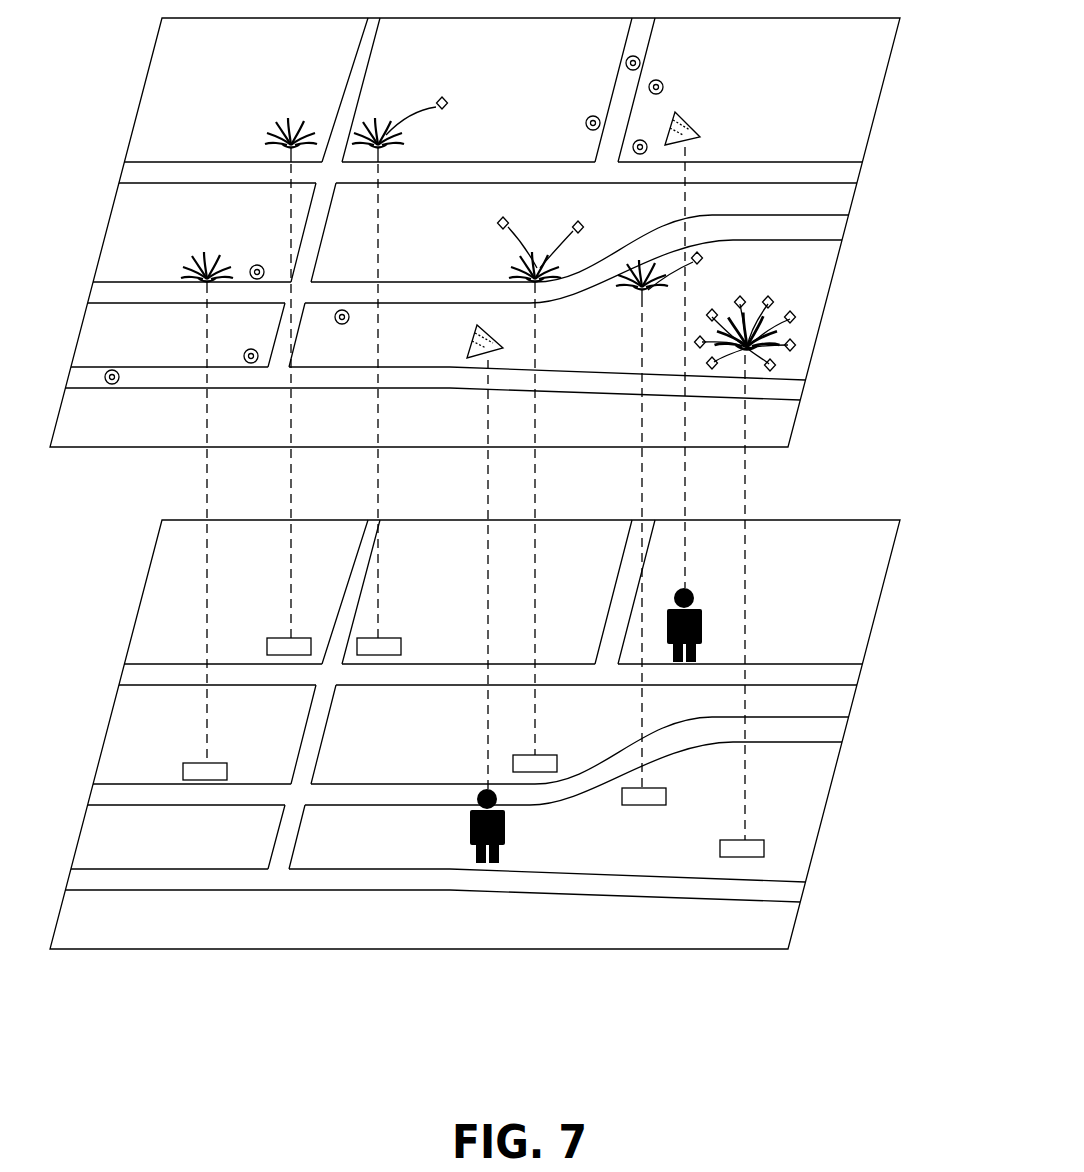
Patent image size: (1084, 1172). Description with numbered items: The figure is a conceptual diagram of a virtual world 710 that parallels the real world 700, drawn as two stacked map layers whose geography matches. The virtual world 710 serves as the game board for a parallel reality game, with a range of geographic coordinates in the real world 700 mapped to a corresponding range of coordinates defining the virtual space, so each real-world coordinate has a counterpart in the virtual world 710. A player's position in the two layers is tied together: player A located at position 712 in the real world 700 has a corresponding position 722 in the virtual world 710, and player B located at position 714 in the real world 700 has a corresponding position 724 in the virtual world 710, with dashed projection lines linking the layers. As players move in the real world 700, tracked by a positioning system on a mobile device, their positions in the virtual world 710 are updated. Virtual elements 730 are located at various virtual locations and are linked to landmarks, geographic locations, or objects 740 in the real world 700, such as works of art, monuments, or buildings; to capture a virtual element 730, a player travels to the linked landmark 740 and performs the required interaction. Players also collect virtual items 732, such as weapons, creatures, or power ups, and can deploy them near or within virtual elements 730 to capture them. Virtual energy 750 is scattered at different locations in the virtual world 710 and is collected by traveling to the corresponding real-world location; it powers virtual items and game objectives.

The real world 700 is at (878, 607).
The virtual world 710 is at (870, 140).
The position of player A in the real world 712 is at (470, 833).
The position of player B in the real world 714 is at (706, 616).
The corresponding position of player A in the virtual world 722 is at (497, 350).
The corresponding position of player B in the virtual world 724 is at (703, 134).
The virtual element 730 is at (293, 125).
The virtual item 732 is at (447, 103).
The real-world landmark or object 740 is at (283, 637).
The virtual energy 750 is at (663, 86).